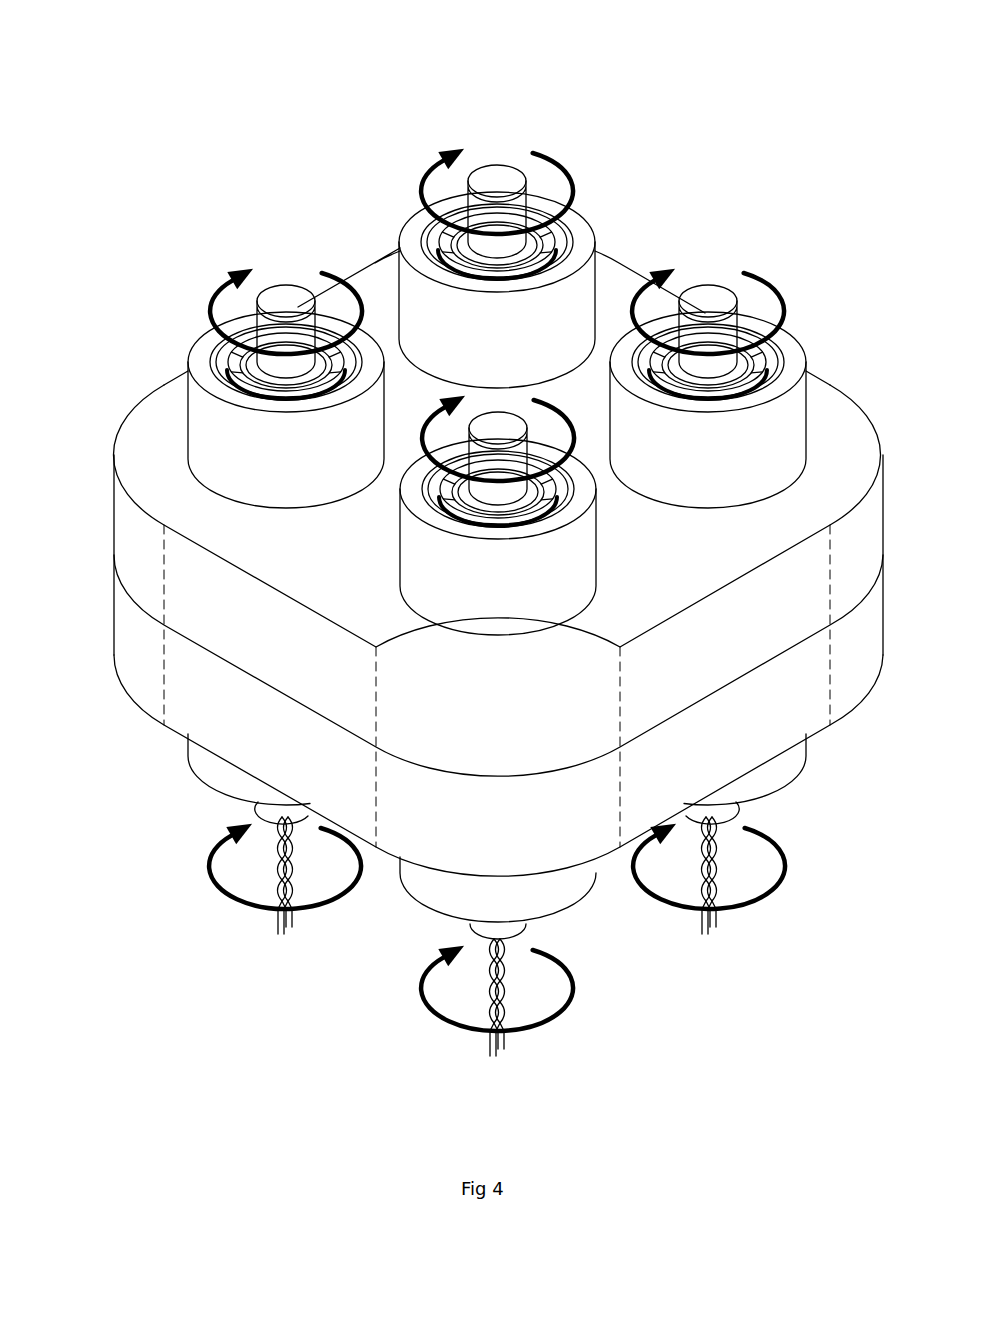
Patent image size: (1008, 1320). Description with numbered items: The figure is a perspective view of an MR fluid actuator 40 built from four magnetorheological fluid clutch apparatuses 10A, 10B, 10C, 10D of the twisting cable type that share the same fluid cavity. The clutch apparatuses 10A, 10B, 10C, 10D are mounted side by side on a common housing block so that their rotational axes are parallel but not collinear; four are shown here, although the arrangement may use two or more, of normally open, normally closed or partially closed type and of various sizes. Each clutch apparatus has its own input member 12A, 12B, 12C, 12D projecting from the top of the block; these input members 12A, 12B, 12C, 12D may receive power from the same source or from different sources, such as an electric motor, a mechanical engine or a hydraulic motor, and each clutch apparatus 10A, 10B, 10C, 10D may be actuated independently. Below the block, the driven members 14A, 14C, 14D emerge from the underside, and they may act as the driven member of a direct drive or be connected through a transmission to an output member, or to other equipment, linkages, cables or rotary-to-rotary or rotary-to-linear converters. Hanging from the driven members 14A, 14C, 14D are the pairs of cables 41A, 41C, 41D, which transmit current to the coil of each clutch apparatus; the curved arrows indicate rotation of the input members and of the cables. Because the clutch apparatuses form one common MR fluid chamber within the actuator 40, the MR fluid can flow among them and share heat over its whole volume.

The MR fluid actuator 40 is at (622, 130).
The MR fluid clutch apparatus 10A is at (211, 296).
The MR fluid clutch apparatus 10B is at (410, 190).
The MR fluid clutch apparatus 10C is at (388, 517).
The MR fluid clutch apparatus 10D is at (716, 265).
The input member 12A is at (276, 280).
The input member 12B is at (492, 159).
The input member 12C is at (490, 412).
The input member 12D is at (733, 290).
The driven member 14A is at (258, 808).
The driven member 14C is at (488, 936).
The driven member 14D is at (736, 810).
The pair of cables 41A is at (277, 926).
The pair of cables 41C is at (490, 1046).
The pair of cables 41D is at (721, 933).